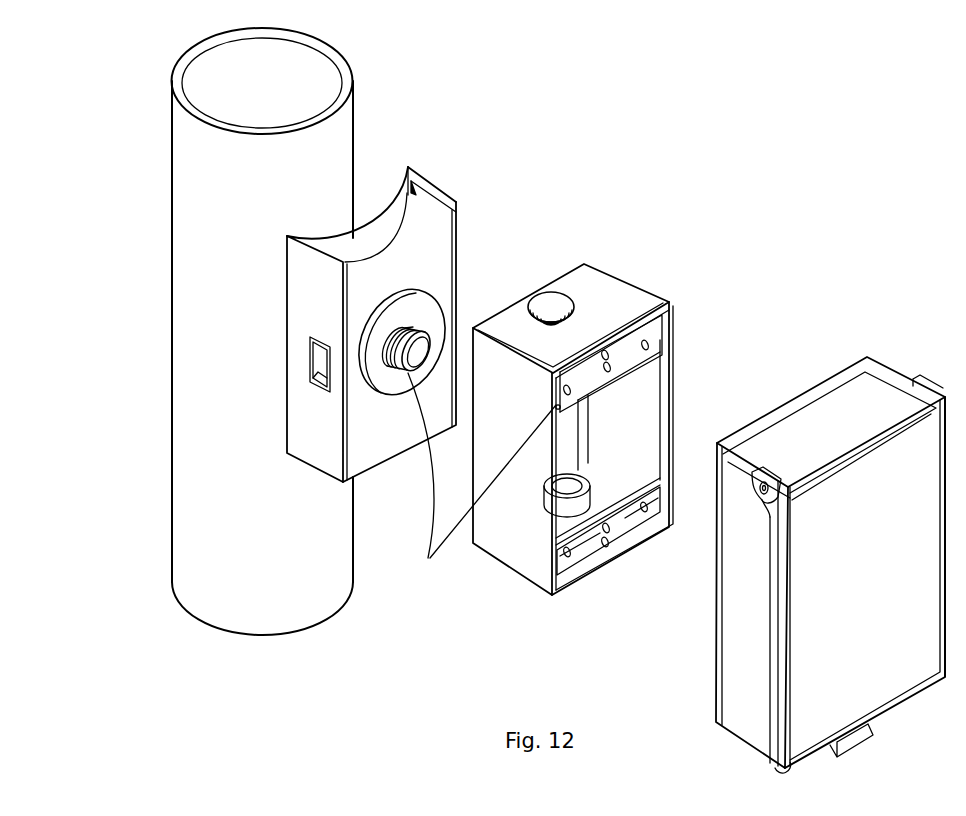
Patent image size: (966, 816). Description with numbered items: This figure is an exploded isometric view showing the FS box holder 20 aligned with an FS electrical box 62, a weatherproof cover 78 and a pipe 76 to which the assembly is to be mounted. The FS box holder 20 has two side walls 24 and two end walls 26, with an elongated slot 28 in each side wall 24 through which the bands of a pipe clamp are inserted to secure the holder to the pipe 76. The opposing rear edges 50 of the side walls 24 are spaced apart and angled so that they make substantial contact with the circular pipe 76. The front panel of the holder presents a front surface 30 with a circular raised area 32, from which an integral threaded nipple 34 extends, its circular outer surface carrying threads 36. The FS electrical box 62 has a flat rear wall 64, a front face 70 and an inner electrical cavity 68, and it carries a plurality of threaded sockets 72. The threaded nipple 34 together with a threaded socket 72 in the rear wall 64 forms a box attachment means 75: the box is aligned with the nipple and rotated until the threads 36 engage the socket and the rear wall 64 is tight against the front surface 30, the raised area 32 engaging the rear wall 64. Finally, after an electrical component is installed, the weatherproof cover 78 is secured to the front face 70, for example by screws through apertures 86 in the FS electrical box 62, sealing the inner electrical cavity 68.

The FS box holder 20 is at (372, 292).
The side wall 24 is at (317, 359).
The end wall 26 is at (428, 195).
The elongated slot 28 is at (310, 356).
The front surface 30 is at (371, 324).
The raised area 32 is at (382, 381).
The threaded nipple 34 is at (421, 326).
The threads 36 is at (391, 342).
The rear edge 50 is at (293, 234).
The FS electrical box 62 is at (617, 407).
The rear wall 64 is at (565, 453).
The inner electrical cavity 68 is at (647, 387).
The front face 70 is at (672, 345).
The threaded socket 72 is at (553, 306).
The box attachment means 75 is at (482, 479).
The pipe 76 is at (355, 130).
The weatherproof cover 78 is at (916, 348).
The aperture 86 is at (608, 530).